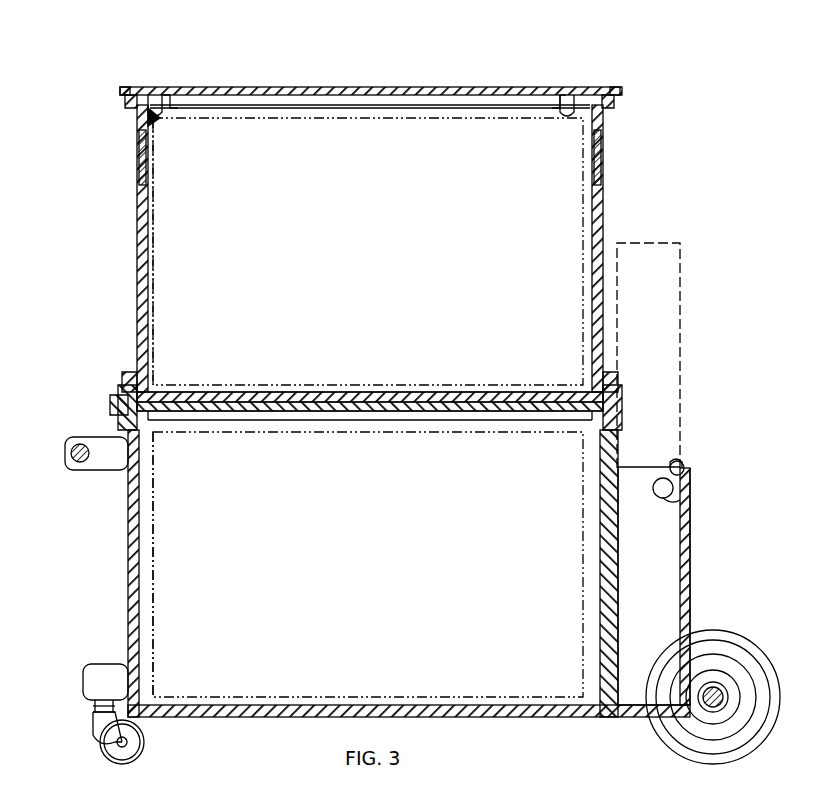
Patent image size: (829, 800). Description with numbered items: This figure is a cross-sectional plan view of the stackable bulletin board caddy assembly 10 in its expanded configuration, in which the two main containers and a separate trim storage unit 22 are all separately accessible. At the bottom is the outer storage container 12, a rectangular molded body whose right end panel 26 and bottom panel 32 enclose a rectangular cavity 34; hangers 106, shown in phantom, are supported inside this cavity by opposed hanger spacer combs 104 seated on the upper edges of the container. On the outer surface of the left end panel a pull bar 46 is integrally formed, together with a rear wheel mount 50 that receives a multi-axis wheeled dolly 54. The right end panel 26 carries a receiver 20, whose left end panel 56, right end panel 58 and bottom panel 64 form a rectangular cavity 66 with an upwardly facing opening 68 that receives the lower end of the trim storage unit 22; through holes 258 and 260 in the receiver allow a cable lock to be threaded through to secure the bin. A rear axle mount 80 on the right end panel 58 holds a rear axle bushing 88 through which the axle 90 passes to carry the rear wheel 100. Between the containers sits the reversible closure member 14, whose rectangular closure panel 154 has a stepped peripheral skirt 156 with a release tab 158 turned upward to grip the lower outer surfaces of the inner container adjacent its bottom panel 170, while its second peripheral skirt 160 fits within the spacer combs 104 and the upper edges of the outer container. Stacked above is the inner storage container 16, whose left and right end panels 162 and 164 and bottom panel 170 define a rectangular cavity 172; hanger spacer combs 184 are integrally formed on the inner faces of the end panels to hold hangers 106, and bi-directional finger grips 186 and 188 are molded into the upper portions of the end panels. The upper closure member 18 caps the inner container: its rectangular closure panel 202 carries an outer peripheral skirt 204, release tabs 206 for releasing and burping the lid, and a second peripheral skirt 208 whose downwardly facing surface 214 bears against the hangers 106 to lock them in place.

The stackable bulletin board caddy assembly 10 is at (638, 56).
The outer storage container 12 is at (128, 553).
The reconfigurable closure member 14 is at (616, 384).
The inner storage container 16 is at (137, 275).
The upper closure member 18 is at (226, 86).
The receiver 20 is at (691, 553).
The trim storage unit 22 is at (681, 300).
The right end panel 26 is at (603, 621).
The bottom panel 32 is at (505, 718).
The rectangular cavity 34 is at (368, 564).
The pull bar 46 is at (80, 463).
The rear wheel mount 50 is at (104, 669).
The rear wheeled dolly 54 is at (103, 727).
The left end panel 56 is at (620, 573).
The right end panel 58 is at (691, 603).
The bottom panel 64 is at (633, 718).
The rectangular cavity 66 is at (650, 470).
The upwardly facing opening 68 is at (684, 462).
The rear axle mount 80 is at (696, 708).
The rear axle bushing 88 is at (723, 716).
The axle 90 is at (720, 686).
The rear wheel 100 is at (757, 738).
The hanger spacer comb 104 is at (120, 420).
The hangers 106 is at (150, 322).
The rectangular closure panel 154 is at (402, 412).
The stepped peripheral skirt 156 is at (124, 378).
The release tab 158 is at (120, 397).
The second peripheral skirt 160 is at (205, 421).
The left end panel 162 is at (140, 212).
The right end panel 164 is at (603, 212).
The bottom panel 170 is at (278, 392).
The rectangular cavity 172 is at (373, 237).
The hanger spacer comb 184 is at (160, 118).
The bi-directional finger grip 186 is at (140, 155).
The bi-directional finger grip 188 is at (602, 165).
The rectangular closure panel 202 is at (492, 87).
The peripheral skirt 204 is at (130, 100).
The release tabs 206 is at (126, 90).
The second peripheral skirt 208 is at (165, 105).
The downwardly facing surface 214 is at (153, 105).
The through hole 258 is at (690, 486).
The through hole 260 is at (672, 495).